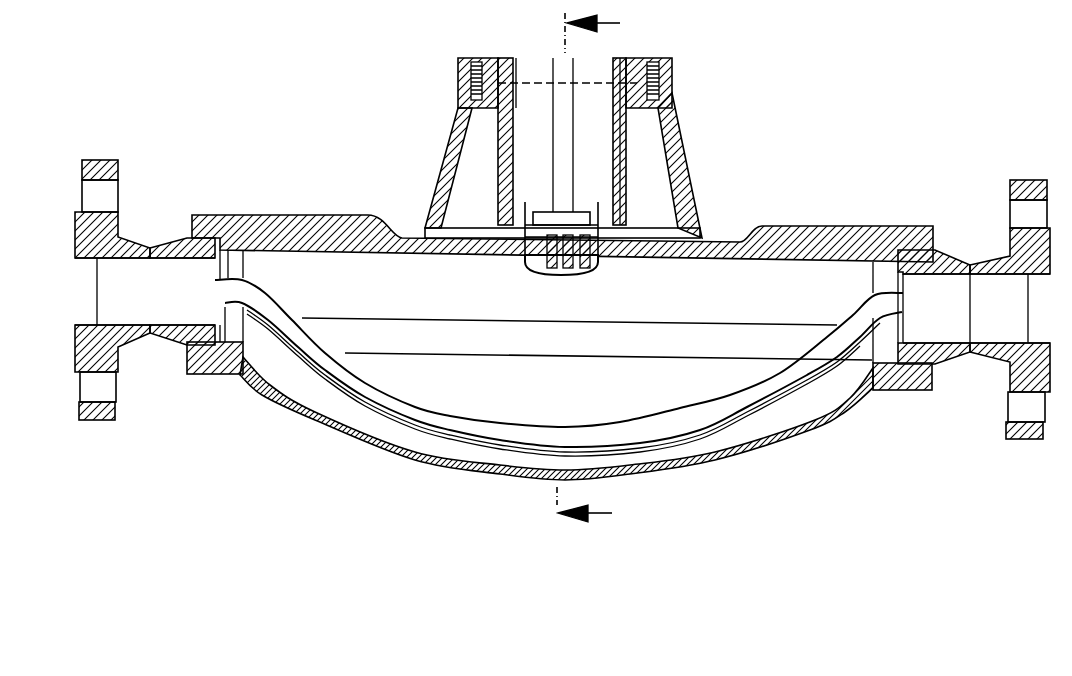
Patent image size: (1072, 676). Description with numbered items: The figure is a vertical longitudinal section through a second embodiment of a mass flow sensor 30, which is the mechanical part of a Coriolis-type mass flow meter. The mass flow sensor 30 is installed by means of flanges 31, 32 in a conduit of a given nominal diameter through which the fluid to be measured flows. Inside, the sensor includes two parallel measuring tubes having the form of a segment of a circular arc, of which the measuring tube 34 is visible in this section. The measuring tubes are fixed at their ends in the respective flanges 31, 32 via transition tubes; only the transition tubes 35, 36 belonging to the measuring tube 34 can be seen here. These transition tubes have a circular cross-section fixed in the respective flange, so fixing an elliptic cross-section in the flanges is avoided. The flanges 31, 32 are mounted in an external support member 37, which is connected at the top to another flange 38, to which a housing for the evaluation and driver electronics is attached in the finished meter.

The mass flow sensor 30 is at (362, 55).
The flange 31 is at (111, 158).
The flange 32 is at (1031, 179).
The measuring tube 34 is at (837, 323).
The transition tube 35 is at (243, 287).
The transition tube 36 is at (876, 300).
The external support member 37 is at (776, 232).
The flange 38 is at (678, 158).